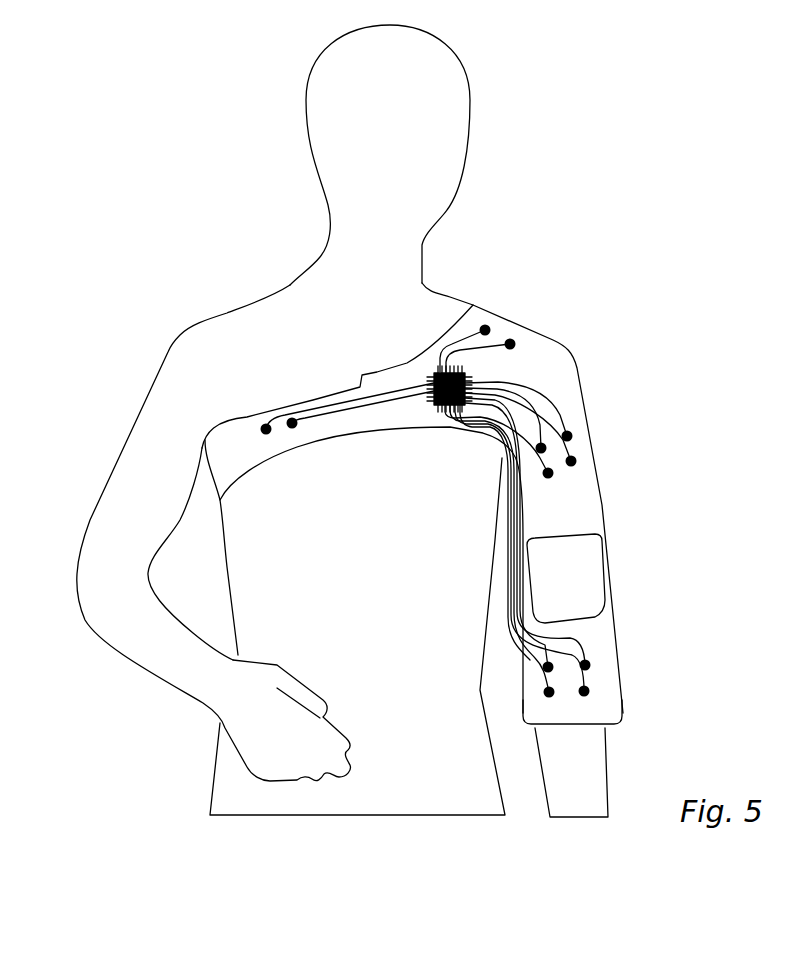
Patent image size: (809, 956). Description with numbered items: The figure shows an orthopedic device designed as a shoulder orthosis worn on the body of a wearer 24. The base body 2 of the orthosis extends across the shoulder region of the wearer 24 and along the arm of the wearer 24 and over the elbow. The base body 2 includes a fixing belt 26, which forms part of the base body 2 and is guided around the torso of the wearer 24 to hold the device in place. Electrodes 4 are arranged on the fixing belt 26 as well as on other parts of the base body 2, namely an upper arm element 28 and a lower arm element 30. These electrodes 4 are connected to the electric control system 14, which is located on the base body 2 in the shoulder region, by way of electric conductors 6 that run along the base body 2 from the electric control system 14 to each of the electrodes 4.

The base body 2 is at (552, 358).
The electrodes 4 is at (292, 430).
The electric conductors 6 is at (527, 412).
The electric control system 14 is at (433, 410).
The wearer 24 is at (260, 337).
The fixing belt 26 is at (323, 425).
The upper arm element 28 is at (577, 478).
The lower arm element 30 is at (610, 695).